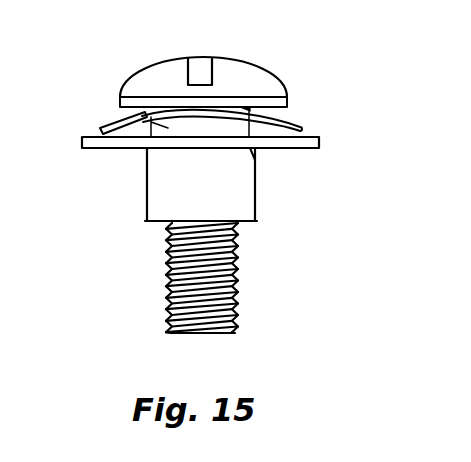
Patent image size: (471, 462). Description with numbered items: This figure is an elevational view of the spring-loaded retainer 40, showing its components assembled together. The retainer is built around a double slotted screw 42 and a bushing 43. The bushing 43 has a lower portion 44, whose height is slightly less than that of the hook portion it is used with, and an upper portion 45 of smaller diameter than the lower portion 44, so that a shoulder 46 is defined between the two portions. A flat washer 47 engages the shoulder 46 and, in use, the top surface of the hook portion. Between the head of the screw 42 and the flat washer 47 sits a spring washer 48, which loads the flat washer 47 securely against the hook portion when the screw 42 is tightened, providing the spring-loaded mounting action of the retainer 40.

The spring-loaded retainer 40 is at (147, 243).
The double slotted screw 42 is at (243, 73).
The bushing 43 is at (245, 195).
The lower portion 44 is at (222, 191).
The upper portion 45 is at (147, 113).
The shoulder 46 is at (255, 150).
The flat washer 47 is at (82, 143).
The spring washer 48 is at (285, 123).